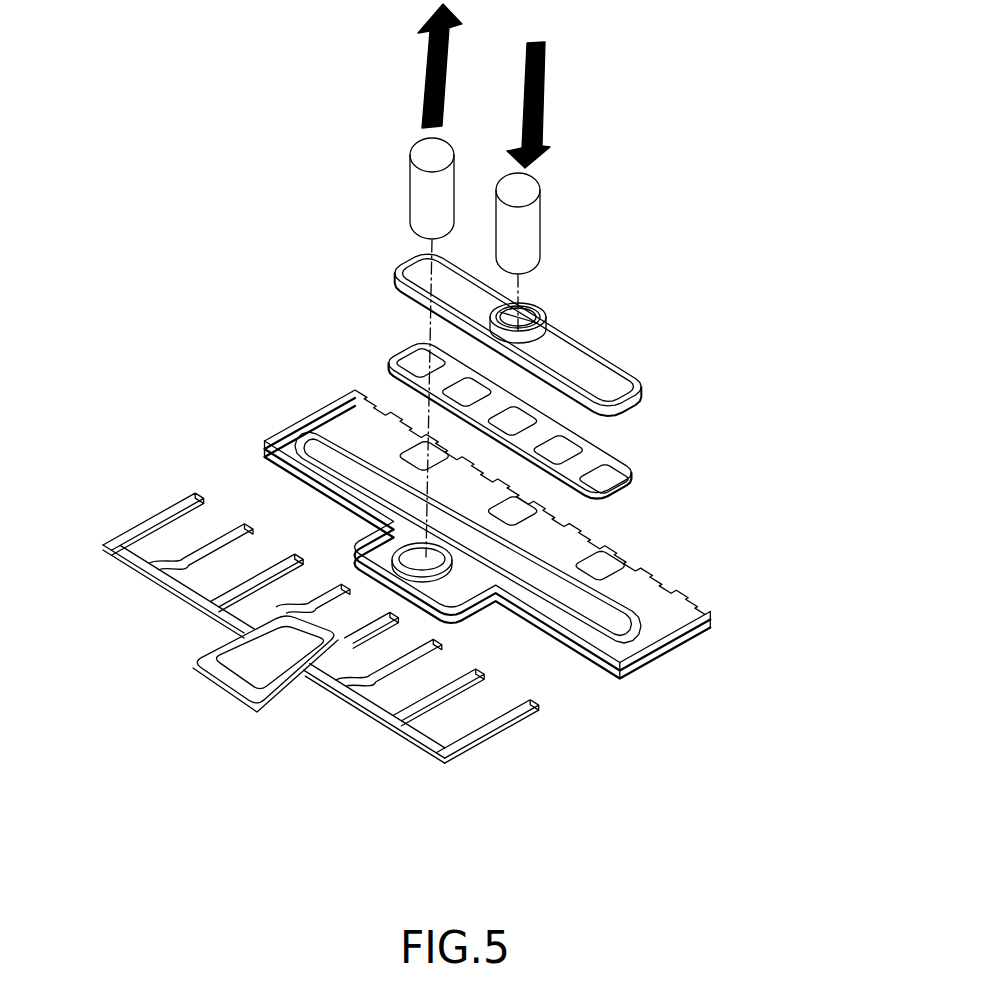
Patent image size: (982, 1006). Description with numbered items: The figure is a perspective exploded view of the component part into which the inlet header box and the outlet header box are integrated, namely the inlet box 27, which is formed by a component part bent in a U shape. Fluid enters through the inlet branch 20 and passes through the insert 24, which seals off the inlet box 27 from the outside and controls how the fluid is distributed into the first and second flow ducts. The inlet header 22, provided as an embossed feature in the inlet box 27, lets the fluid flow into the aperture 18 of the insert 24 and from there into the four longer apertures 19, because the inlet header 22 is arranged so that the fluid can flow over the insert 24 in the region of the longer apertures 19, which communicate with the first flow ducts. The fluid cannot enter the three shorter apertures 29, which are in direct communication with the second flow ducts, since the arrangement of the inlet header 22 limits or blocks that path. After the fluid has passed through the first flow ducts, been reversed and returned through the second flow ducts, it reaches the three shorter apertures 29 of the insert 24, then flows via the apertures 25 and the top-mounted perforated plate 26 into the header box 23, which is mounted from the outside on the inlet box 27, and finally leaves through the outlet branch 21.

The aperture 18 is at (260, 665).
The longer apertures 19 is at (158, 555).
The inlet branch 20 is at (416, 197).
The outlet branch 21 is at (532, 230).
The inlet header 22 is at (613, 625).
The header box 23 is at (617, 373).
The insert 24 is at (303, 664).
The apertures 25 is at (625, 565).
The top-mounted perforated plate 26 is at (640, 480).
The inlet box 27 is at (680, 615).
The shorter apertures 29 is at (253, 558).